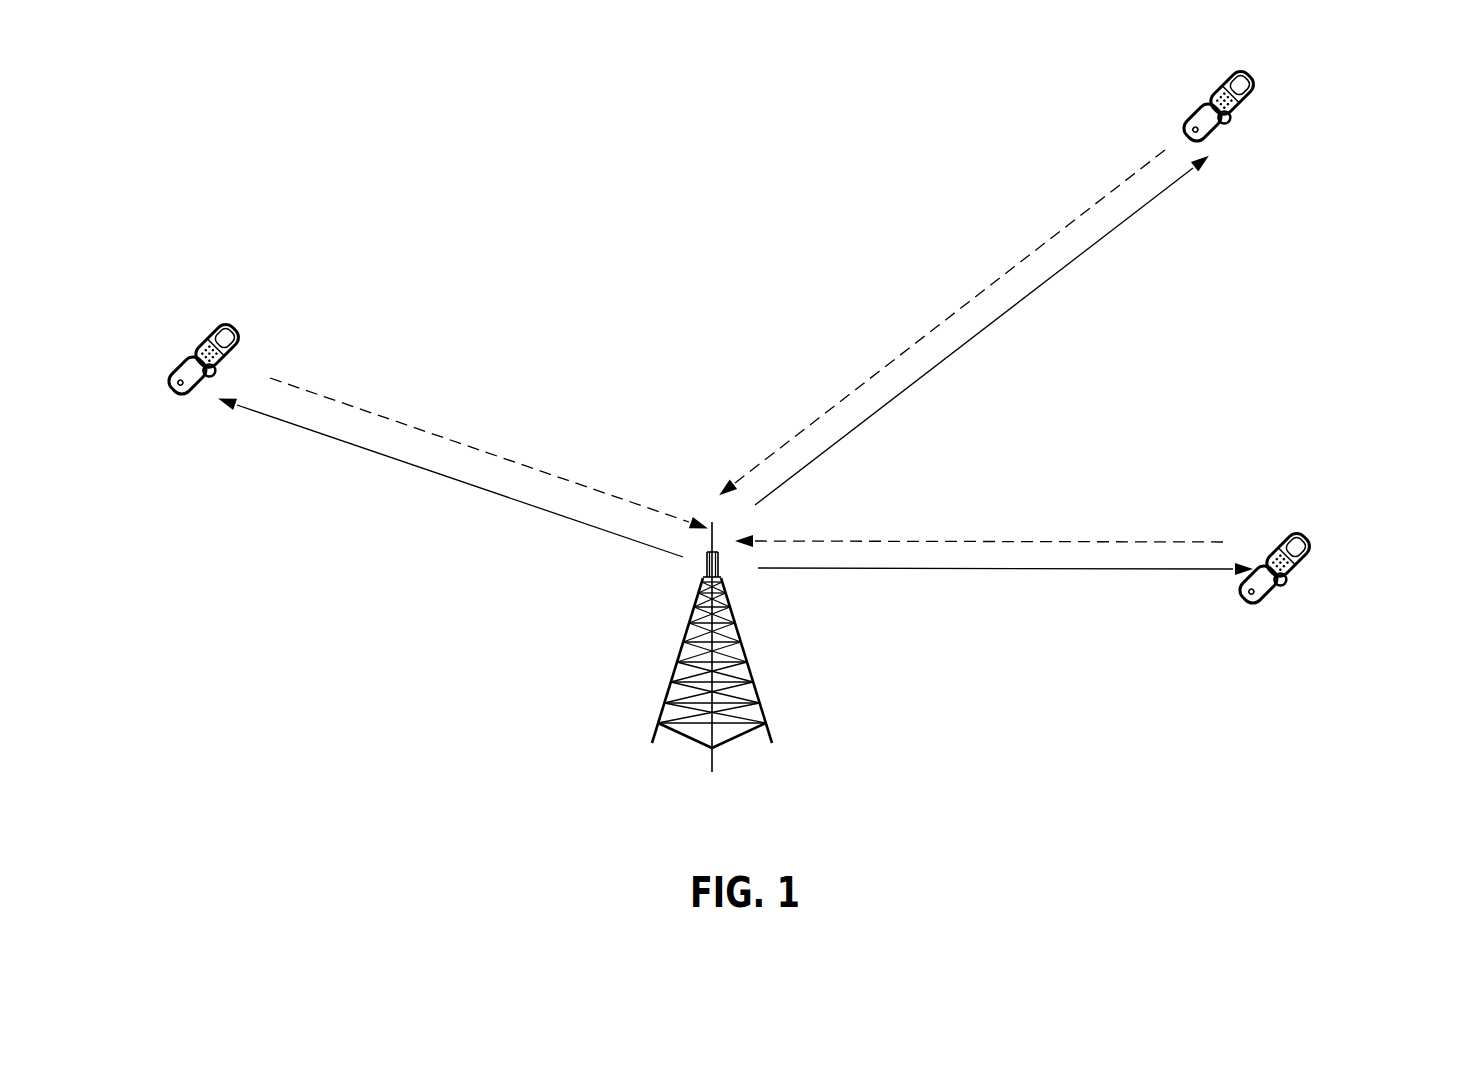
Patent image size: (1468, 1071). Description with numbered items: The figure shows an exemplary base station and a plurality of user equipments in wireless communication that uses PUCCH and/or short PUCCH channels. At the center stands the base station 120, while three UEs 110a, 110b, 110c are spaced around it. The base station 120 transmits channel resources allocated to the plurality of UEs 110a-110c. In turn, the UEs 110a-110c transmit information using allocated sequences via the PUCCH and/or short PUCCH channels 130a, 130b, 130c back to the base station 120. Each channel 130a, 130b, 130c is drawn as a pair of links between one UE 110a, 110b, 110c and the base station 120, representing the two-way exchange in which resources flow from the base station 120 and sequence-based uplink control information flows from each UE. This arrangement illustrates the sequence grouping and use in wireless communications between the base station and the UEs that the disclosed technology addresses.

The UE 110a is at (187, 332).
The UE 110b is at (1322, 575).
The UE 110c is at (1268, 112).
The base station 120 is at (790, 753).
The PUCCH and/or short PUCCH channel 130a is at (505, 440).
The PUCCH and/or short PUCCH channel 130b is at (1005, 523).
The PUCCH and/or short PUCCH channel 130c is at (958, 300).